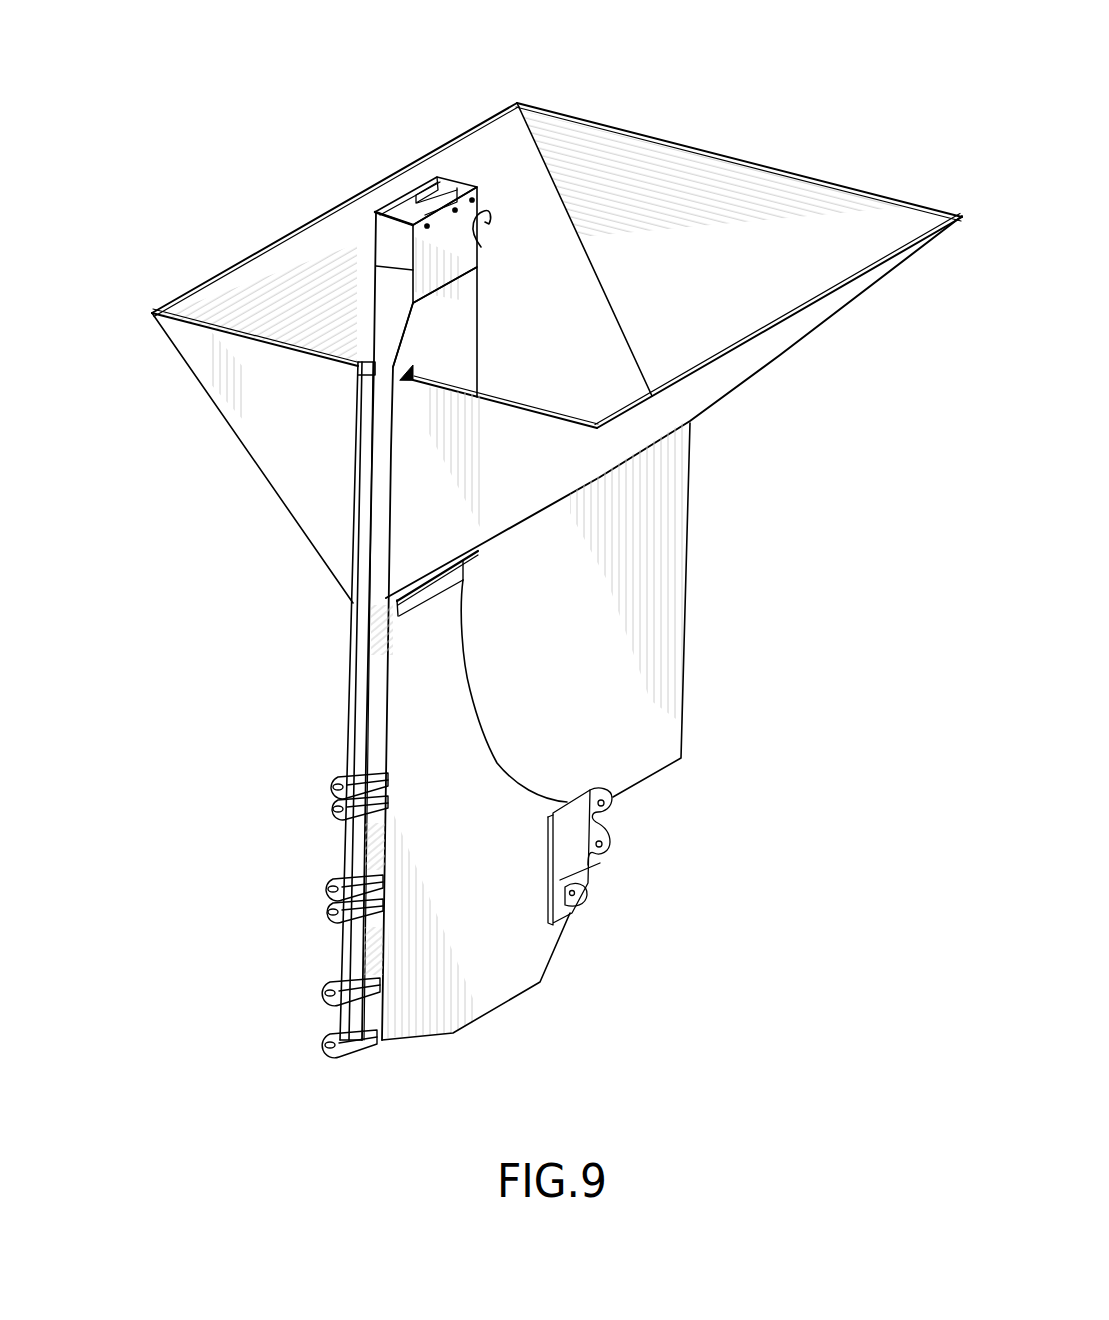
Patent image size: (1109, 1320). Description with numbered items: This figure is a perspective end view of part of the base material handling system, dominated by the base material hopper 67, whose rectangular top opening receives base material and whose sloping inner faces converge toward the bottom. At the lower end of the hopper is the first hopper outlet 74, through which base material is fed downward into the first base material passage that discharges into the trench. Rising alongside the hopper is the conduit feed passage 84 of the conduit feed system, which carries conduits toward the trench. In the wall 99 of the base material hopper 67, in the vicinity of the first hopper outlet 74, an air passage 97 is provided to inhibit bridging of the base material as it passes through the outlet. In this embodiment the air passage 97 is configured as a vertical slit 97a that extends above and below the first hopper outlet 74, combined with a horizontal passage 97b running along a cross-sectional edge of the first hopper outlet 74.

The base material hopper 67 is at (557, 340).
The first hopper outlet 74 is at (377, 590).
The conduit feed passage 84 is at (390, 235).
The air passage 97 is at (210, 456).
The vertical slit 97a is at (382, 423).
The horizontal passage 97b is at (430, 577).
The wall 99 is at (420, 500).